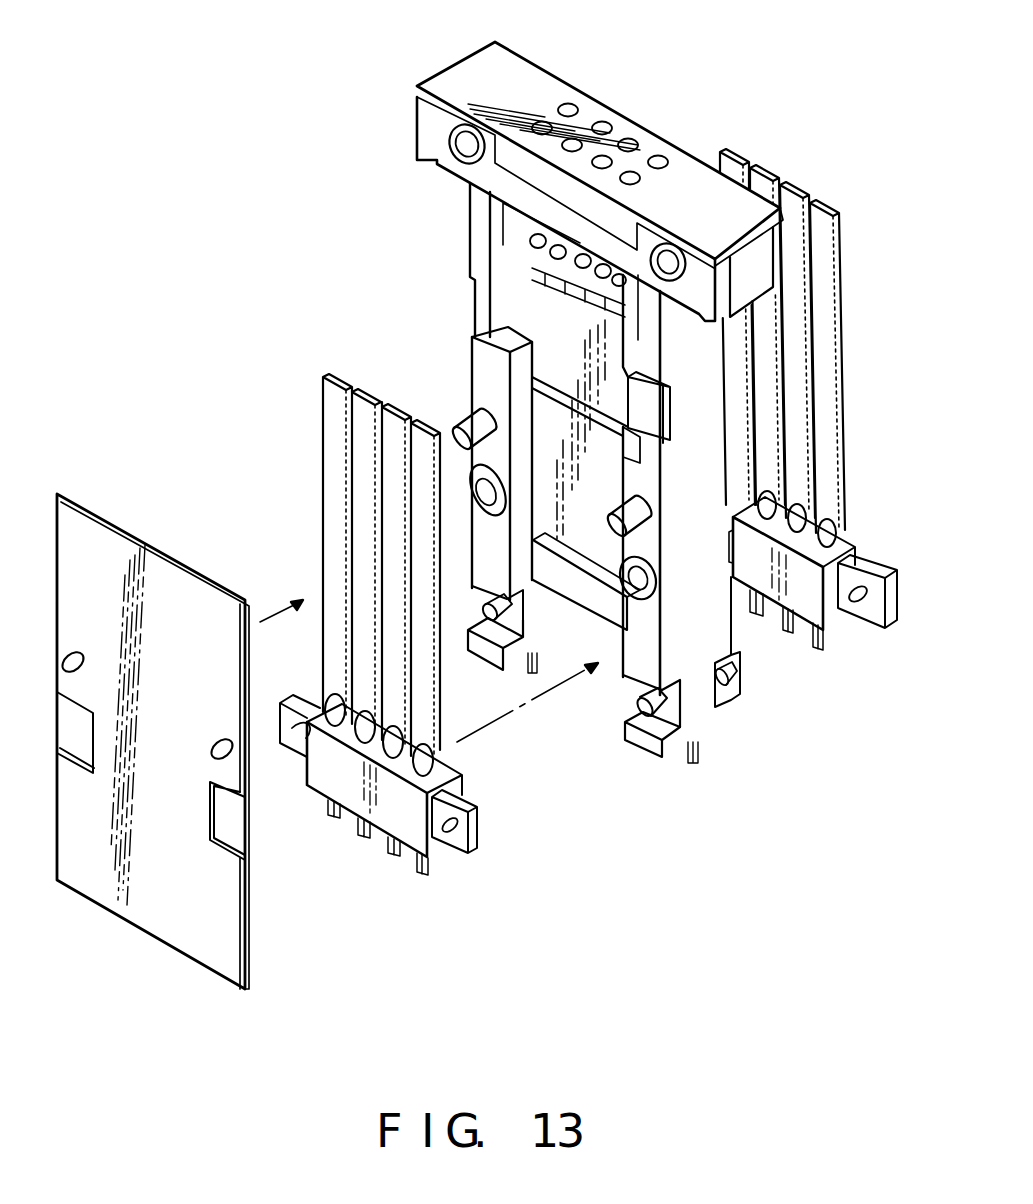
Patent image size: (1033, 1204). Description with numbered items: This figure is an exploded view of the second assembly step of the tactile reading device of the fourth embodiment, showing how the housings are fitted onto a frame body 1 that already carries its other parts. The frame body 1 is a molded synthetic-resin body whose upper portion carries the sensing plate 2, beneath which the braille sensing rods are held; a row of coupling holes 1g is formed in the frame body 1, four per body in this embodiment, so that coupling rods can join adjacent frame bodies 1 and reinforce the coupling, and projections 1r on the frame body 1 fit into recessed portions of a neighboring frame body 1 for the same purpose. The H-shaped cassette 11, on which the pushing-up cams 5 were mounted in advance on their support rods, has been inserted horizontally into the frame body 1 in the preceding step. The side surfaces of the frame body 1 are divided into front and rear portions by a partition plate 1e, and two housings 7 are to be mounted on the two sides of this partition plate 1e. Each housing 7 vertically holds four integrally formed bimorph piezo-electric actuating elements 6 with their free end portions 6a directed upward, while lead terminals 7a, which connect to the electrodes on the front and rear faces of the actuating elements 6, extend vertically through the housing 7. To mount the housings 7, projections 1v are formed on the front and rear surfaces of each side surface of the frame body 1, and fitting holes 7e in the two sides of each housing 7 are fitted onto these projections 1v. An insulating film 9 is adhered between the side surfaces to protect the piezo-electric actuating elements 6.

The frame body 1 is at (712, 345).
The partition plate 1e is at (600, 488).
The coupling holes 1g is at (668, 258).
The projections 1r is at (473, 420).
The projections 1v is at (723, 678).
The sensing plate 2 is at (528, 78).
The pushing-up cams 5 is at (538, 252).
The piezo-electric actuating elements 6 is at (330, 537).
The free end portions 6a is at (328, 403).
The housings 7 is at (322, 785).
The lead terminals 7a is at (417, 863).
The fitting holes 7e is at (452, 833).
The insulating film 9 is at (140, 912).
The cassette 11 is at (543, 323).